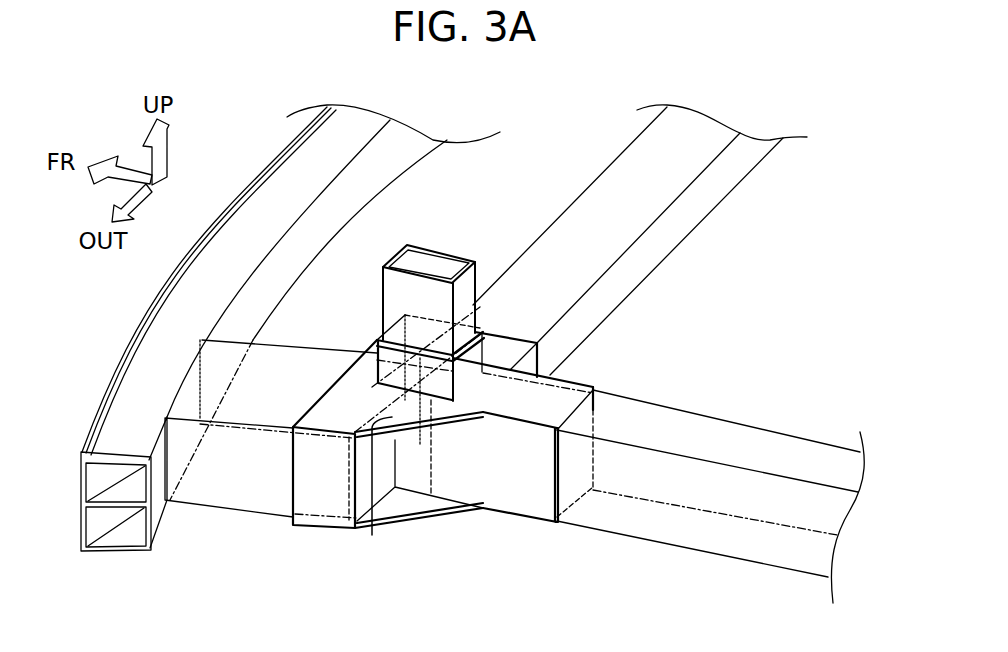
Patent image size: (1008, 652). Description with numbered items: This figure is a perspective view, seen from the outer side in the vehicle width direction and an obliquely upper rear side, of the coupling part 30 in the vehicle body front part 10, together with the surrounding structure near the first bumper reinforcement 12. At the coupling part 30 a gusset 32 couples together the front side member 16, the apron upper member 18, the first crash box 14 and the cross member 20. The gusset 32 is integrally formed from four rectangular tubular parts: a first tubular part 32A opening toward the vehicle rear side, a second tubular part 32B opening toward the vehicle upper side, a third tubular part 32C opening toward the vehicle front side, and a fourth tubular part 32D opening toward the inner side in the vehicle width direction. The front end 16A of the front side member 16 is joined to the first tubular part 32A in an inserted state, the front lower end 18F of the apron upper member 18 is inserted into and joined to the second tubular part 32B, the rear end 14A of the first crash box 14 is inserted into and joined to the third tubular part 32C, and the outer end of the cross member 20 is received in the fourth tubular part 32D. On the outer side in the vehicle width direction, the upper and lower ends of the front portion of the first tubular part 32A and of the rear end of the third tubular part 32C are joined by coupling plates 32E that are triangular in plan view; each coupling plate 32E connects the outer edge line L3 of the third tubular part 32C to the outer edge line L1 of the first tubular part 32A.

The vehicle body front part 10 is at (812, 215).
The first bumper reinforcement 12 is at (153, 343).
The first crash box 14 is at (271, 454).
The rear end of the first crash box 14A is at (337, 402).
The front side member 16 is at (644, 496).
The front end of the front side member 16A is at (448, 465).
The apron upper member 18 is at (373, 323).
The front lower end of the apron upper member 18F is at (377, 362).
The cross member 20 is at (660, 250).
The coupling part 30 is at (627, 360).
The gusset 32 is at (434, 447).
The first tubular part 32A is at (537, 500).
The second tubular part 32B is at (465, 375).
The third tubular part 32C is at (315, 507).
The fourth tubular part 32D is at (507, 350).
The coupling plate 32E is at (371, 540).
The edge line of the first tubular part L1 is at (518, 425).
The edge line of the third tubular part L3 is at (300, 447).